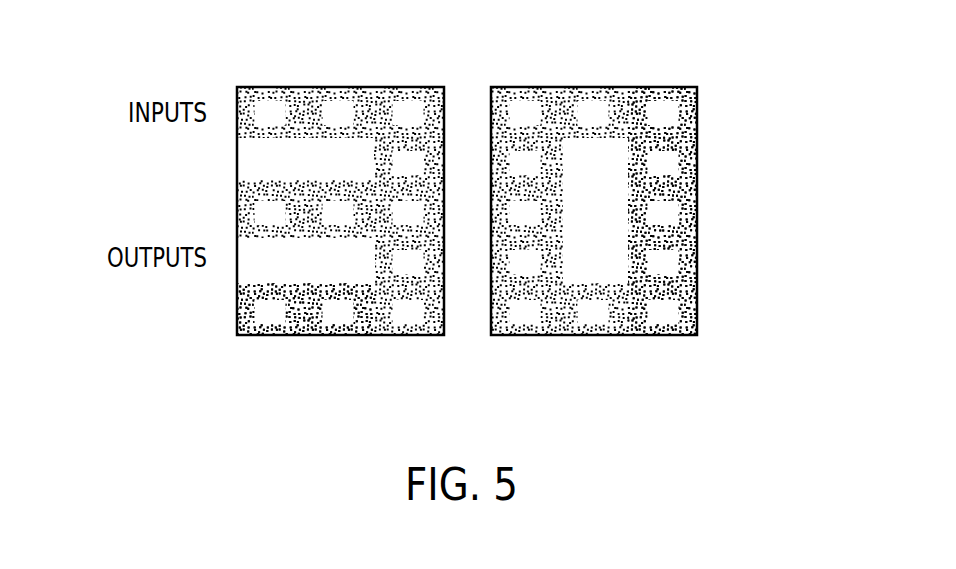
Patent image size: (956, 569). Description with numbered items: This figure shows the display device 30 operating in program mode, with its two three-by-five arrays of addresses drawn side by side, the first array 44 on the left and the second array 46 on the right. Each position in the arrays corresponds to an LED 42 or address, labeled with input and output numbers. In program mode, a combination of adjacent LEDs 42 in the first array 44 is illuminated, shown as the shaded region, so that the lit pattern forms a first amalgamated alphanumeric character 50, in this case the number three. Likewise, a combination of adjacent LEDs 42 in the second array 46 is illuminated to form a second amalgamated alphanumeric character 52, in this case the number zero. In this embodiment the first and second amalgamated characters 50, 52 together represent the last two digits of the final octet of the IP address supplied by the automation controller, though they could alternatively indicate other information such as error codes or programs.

The display device 30 is at (530, 56).
The first 3×5 array 44 is at (318, 250).
The second 3×5 array 46 is at (623, 250).
The first amalgamated alphanumeric character 50 is at (245, 312).
The LEDs 42 is at (678, 125).
The second amalgamated alphanumeric character 52 is at (678, 273).